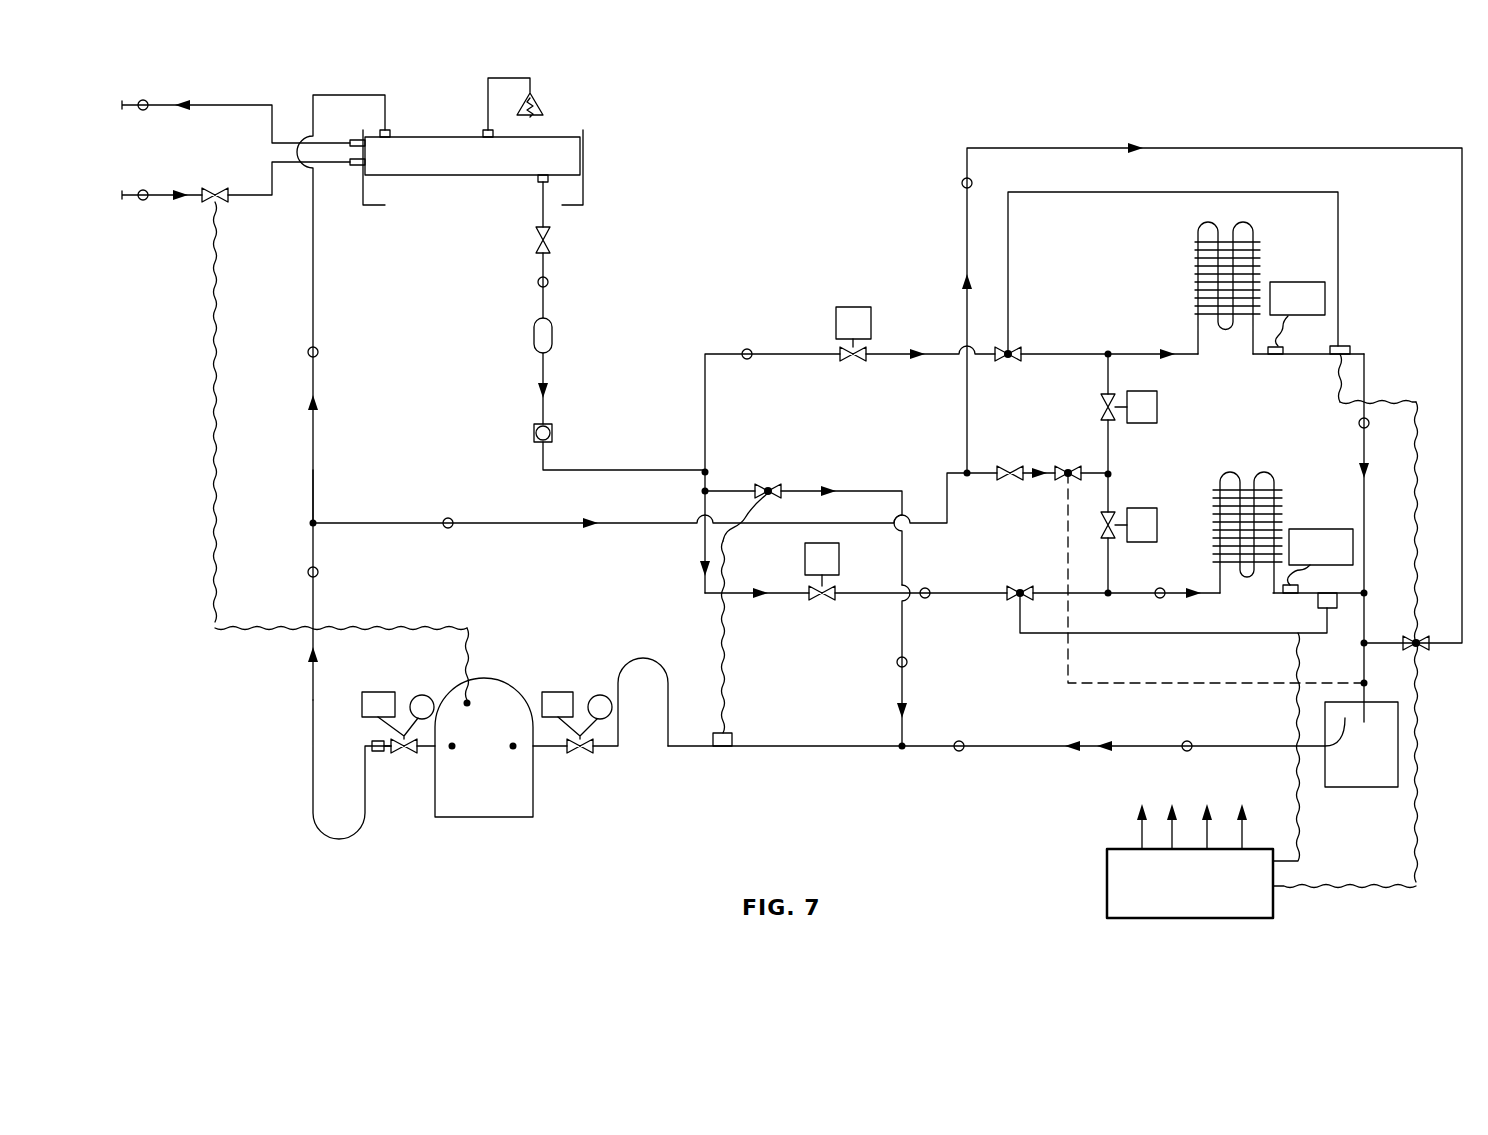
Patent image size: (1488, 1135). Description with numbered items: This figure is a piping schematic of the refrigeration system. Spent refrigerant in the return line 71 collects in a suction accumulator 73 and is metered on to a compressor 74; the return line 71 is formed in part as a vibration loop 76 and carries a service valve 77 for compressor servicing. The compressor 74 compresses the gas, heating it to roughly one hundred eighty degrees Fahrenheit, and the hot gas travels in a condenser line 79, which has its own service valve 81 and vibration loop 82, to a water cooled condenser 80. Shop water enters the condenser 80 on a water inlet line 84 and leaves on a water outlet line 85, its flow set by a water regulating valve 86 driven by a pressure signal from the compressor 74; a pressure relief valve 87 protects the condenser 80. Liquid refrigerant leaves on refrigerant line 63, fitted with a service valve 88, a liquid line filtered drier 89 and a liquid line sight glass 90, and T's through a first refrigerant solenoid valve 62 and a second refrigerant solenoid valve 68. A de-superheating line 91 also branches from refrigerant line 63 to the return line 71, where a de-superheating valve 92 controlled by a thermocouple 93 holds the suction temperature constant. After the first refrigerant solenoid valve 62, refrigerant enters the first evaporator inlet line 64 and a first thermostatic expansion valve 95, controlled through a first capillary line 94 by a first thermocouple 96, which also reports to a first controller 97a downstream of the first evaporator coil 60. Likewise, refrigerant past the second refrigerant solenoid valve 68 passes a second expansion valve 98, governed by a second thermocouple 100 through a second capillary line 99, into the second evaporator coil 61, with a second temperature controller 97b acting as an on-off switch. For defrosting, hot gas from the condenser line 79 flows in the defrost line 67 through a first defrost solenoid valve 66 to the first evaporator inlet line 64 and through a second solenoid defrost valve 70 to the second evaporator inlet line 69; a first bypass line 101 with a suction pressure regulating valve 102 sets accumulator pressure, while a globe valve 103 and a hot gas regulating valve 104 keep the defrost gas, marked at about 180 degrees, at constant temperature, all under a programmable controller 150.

The first evaporator coil 60 is at (1198, 255).
The second evaporator coil 61 is at (1277, 495).
The first refrigerant solenoid valve 62 is at (862, 305).
The refrigerant line 63 is at (707, 420).
The first evaporator inlet line 64 is at (948, 352).
The first defrost solenoid valve 66 is at (1160, 400).
The defrost line 67 is at (483, 525).
The second refrigerant solenoid valve 68 is at (840, 562).
The second evaporator inlet line 69 is at (1085, 590).
The second solenoid defrost valve 70 is at (1145, 474).
The return line 71 is at (1364, 578).
The suction accumulator 73 is at (1345, 787).
The compressor 74 is at (499, 778).
The vibration loop 76 is at (683, 670).
The service valve 77 is at (585, 753).
The condenser line 79 is at (318, 283).
The water cooled condenser 80 is at (478, 177).
The service valve 81 is at (406, 753).
The vibration loop 82 is at (320, 822).
The water inlet line 84 is at (262, 197).
The water outlet line 85 is at (272, 113).
The water regulating valve 86 is at (215, 205).
The pressure relief valve 87 is at (487, 128).
The service valve 88 is at (553, 240).
The liquid line filtered drier 89 is at (552, 335).
The liquid line sight glass 90 is at (552, 433).
The de-superheating line 91 is at (905, 640).
The de-superheating valve 92 is at (771, 489).
The thermocouple 93 is at (735, 733).
The first capillary line 94 is at (1150, 192).
The first thermostatic expansion valve 95 is at (1020, 350).
The first thermocouple 96 is at (1345, 346).
The first controller 97a is at (1296, 282).
The second temperature controller 97b is at (1316, 528).
The second expansion valve 98 is at (1010, 587).
The second capillary line 99 is at (1160, 633).
The second thermocouple 100 is at (1318, 600).
The first bypass line 101 is at (1290, 148).
The suction pressure regulating valve 102 is at (1433, 650).
The globe valve 103 is at (1012, 482).
The hot gas regulating valve 104 is at (1062, 464).
The programmable controller 150 is at (1190, 861).
The 180 degree temperature point 180 is at (313, 480).